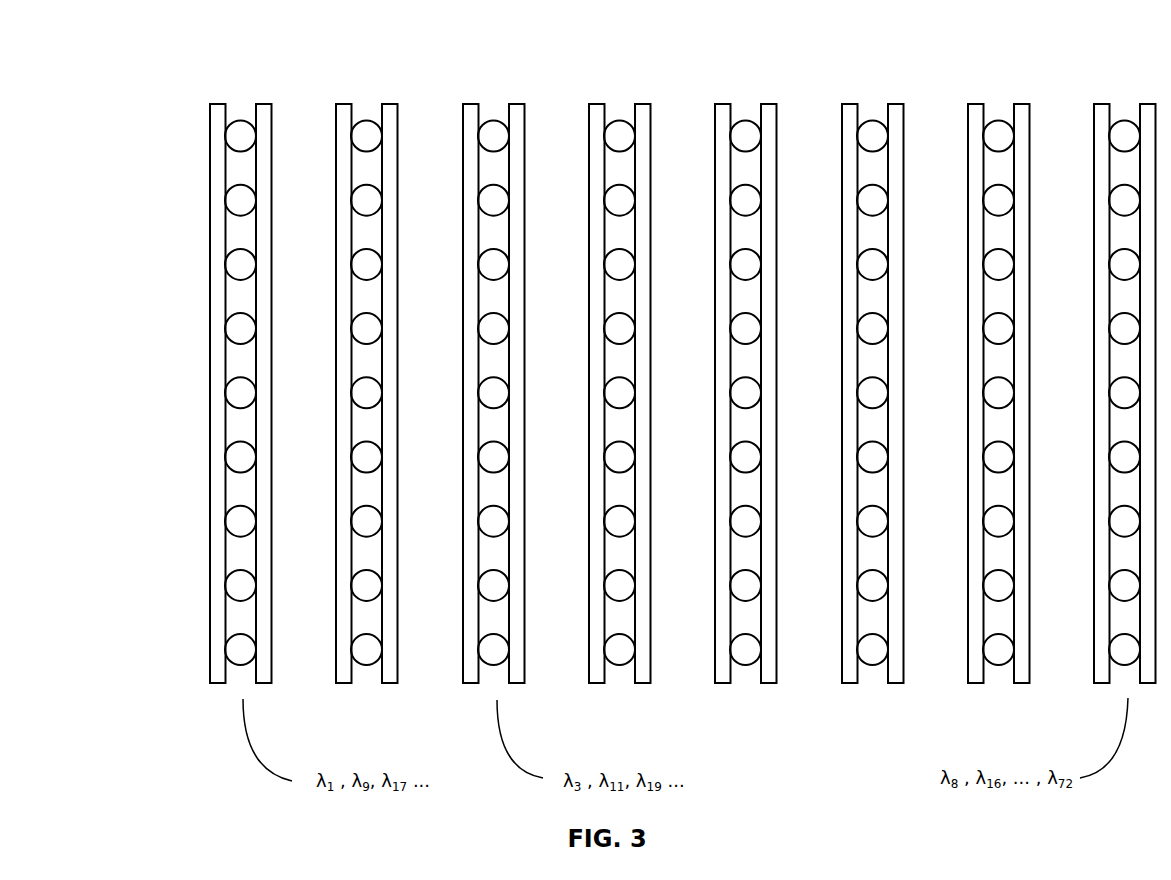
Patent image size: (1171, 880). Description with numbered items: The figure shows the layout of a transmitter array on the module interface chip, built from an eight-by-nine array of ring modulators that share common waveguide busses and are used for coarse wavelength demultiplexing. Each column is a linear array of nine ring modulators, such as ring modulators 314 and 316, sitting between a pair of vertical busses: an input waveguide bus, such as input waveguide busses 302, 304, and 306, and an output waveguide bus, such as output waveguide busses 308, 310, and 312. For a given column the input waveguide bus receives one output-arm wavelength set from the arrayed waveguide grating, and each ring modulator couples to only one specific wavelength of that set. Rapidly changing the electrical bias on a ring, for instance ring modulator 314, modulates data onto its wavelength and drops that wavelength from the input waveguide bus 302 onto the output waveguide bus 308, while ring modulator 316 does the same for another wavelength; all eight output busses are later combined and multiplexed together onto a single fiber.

The input waveguide bus 302 is at (210, 104).
The input waveguide bus 304 is at (463, 104).
The input waveguide bus 306 is at (1109, 104).
The output waveguide bus 308 is at (258, 683).
The output waveguide bus 310 is at (511, 683).
The output waveguide bus 312 is at (1156, 104).
The ring modulator 314 is at (225, 136).
The ring modulator 316 is at (225, 330).